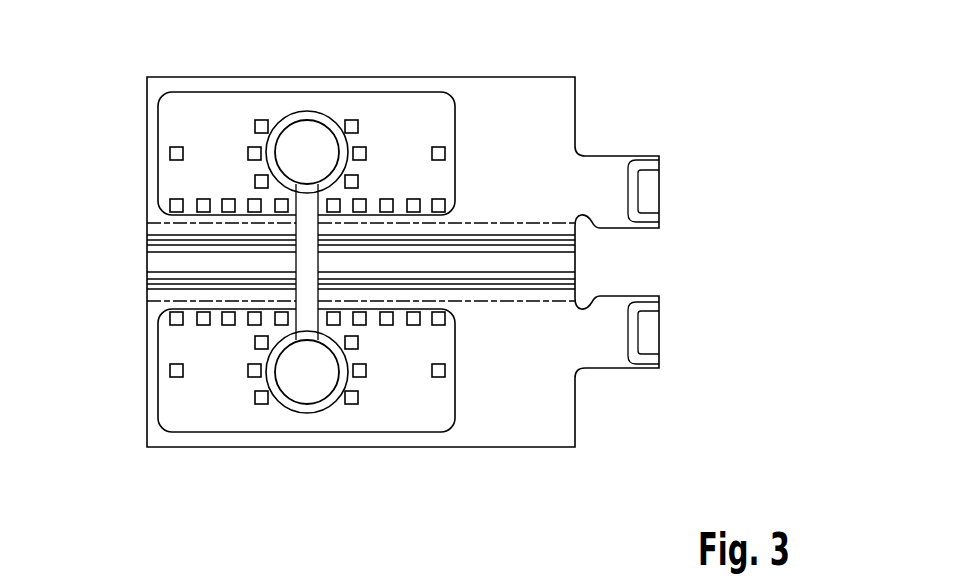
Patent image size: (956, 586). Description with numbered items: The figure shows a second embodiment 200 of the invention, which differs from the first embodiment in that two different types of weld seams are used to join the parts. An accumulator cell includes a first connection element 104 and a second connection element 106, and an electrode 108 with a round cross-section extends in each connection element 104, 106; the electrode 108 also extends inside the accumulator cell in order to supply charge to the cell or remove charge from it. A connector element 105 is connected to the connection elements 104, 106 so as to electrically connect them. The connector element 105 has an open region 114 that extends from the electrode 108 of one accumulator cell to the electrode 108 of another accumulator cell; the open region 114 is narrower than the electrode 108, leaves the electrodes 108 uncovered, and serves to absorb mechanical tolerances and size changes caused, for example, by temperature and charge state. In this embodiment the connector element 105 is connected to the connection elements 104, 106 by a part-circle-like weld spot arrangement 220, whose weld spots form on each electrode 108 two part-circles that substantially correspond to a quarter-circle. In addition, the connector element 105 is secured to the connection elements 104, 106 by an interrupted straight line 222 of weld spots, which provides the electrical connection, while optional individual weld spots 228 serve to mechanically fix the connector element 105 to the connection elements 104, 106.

The second embodiment 200 is at (696, 64).
The first connection element 104 is at (223, 107).
The second connection element 106 is at (223, 418).
The electrode 108 is at (307, 140).
The connector element 105 is at (558, 126).
The open region 114 is at (305, 257).
The part-circle-like weld spot arrangement 220 is at (248, 178).
The interrupted straight line of weld spots 222 is at (458, 203).
The individual weld spots 228 is at (438, 140).